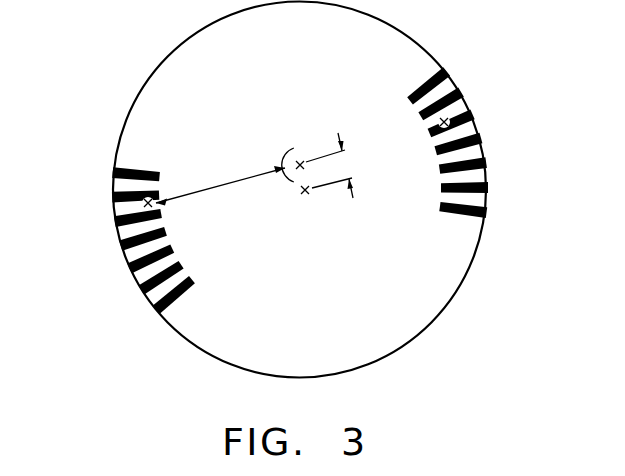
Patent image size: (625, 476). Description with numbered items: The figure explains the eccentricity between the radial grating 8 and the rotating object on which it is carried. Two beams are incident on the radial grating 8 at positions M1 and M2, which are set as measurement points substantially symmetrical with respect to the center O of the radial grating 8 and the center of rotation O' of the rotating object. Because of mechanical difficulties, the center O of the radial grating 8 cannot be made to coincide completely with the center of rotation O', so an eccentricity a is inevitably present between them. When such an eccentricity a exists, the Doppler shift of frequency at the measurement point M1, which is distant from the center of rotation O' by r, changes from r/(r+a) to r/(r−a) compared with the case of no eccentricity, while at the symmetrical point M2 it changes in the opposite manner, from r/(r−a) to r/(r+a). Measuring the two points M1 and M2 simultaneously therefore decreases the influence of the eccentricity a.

The radial grating 8 is at (481, 202).
The incident position M1 is at (145, 203).
The incident position M2 is at (447, 121).
The center of the radial grating O is at (312, 213).
The center of rotation O' is at (296, 143).
The distance from the center of rotation r is at (220, 186).
The eccentricity a is at (329, 165).